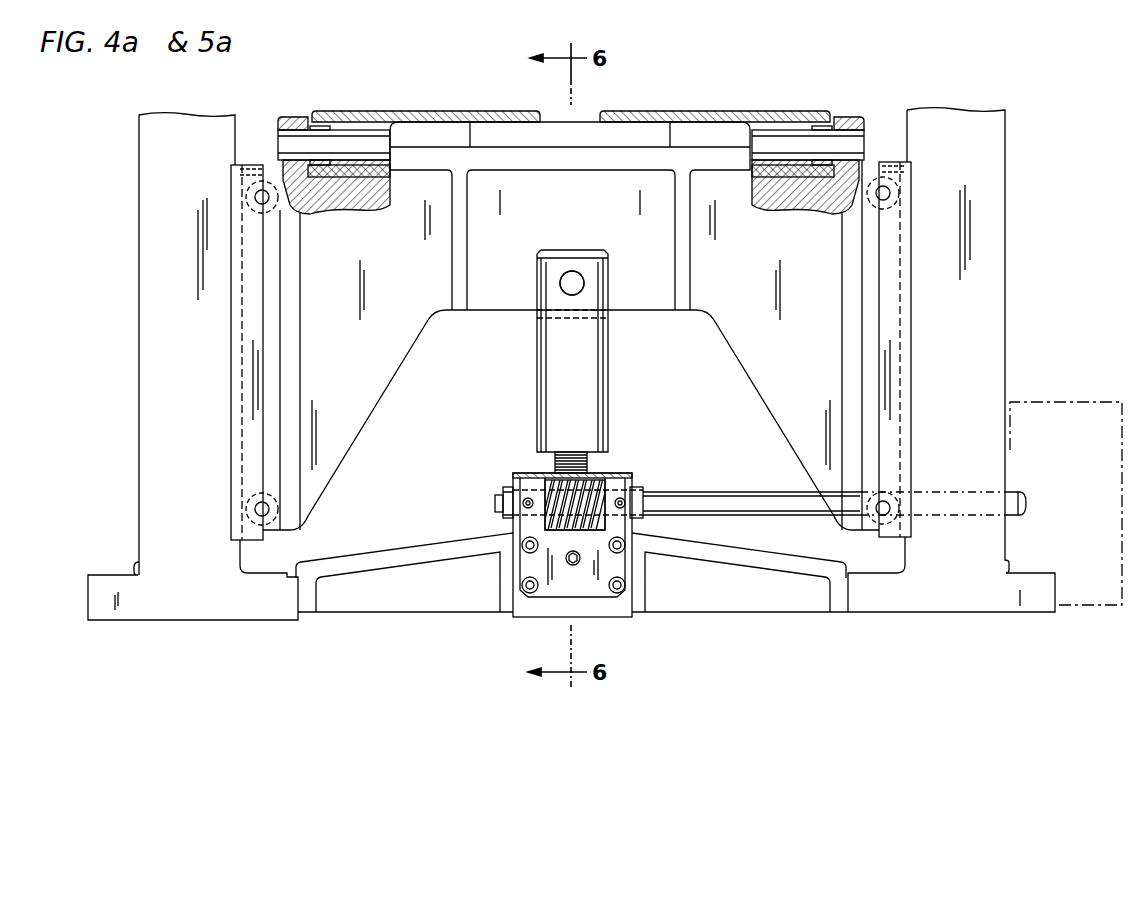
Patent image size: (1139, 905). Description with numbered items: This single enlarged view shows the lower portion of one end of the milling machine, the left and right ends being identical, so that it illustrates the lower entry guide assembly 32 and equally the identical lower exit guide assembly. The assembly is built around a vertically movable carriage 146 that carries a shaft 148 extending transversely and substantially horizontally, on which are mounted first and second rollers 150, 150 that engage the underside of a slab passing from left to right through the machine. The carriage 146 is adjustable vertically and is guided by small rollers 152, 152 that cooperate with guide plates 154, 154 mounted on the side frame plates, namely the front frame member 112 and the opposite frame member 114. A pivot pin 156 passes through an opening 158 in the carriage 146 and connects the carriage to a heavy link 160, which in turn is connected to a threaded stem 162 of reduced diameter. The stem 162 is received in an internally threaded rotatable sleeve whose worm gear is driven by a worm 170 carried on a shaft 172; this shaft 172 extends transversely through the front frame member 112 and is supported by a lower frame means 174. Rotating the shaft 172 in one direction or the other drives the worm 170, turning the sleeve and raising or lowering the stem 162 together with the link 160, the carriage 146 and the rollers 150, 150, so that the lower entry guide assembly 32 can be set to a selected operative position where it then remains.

The lower entry guide assembly 32 is at (462, 335).
The front frame member 112 is at (1005, 340).
The left side plate 114 is at (139, 270).
The carriage 146 is at (642, 300).
The shaft 148 is at (840, 135).
The rollers 150 is at (505, 111).
The small rollers 152 is at (246, 195).
The guide plates 154 is at (238, 350).
The pivot pin 156 is at (567, 278).
The opening 158 is at (582, 280).
The link 160 is at (608, 410).
The threaded stem 162 is at (580, 473).
The worm 170 is at (545, 517).
The shaft 172 is at (762, 513).
The lower frame means 174 is at (625, 573).